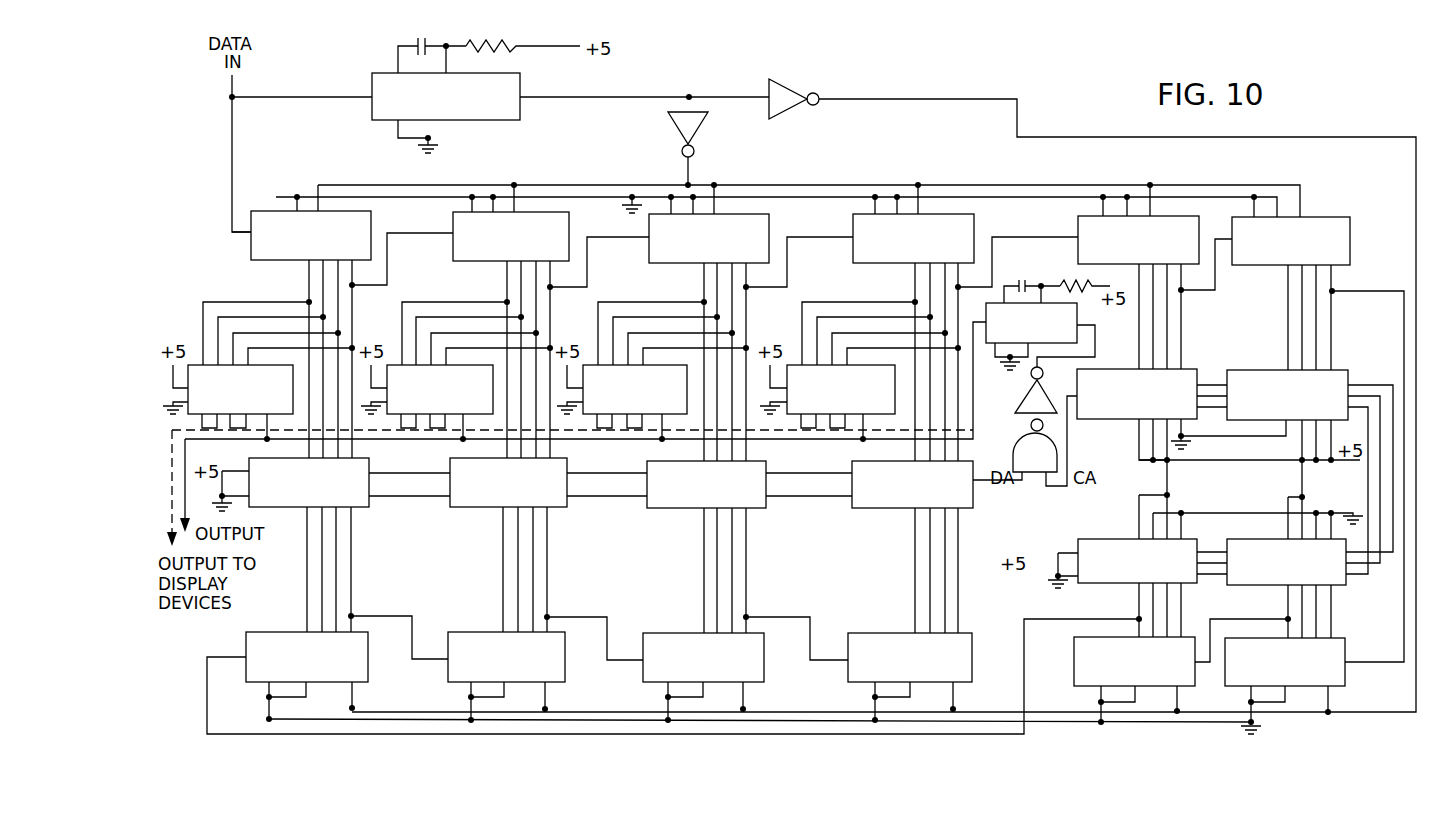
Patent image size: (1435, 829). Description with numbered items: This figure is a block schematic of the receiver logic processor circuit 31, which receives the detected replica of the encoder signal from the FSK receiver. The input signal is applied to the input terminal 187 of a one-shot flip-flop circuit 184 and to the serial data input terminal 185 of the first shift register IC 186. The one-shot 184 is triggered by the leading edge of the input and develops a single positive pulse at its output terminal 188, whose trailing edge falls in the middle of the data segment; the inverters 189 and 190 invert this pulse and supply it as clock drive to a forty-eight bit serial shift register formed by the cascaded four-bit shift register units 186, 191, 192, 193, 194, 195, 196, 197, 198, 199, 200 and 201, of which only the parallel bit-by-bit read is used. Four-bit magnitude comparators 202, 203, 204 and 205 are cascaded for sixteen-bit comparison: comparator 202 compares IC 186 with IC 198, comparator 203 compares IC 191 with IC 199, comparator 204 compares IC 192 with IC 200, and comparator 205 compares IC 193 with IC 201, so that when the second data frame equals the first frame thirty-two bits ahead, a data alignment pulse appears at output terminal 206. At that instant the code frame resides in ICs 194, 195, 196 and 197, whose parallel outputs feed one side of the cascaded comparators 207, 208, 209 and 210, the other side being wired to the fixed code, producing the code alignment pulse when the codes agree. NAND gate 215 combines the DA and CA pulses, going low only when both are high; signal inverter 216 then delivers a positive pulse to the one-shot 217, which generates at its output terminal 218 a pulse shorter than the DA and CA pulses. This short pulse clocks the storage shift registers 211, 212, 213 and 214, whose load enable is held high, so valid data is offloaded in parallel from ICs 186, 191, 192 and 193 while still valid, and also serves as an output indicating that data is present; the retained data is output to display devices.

The receiver logic processor circuit 31 is at (1030, 102).
The one-shot flip-flop circuit 184 is at (462, 121).
The serial data input terminal 185 is at (251, 233).
The 7495 IC 186 is at (371, 218).
The input terminal 187 is at (372, 100).
The output terminal 188 is at (520, 97).
The inverter 189 is at (700, 126).
The inverter 190 is at (790, 89).
The 7495 IC 191 is at (569, 219).
The 7495 IC 192 is at (769, 218).
The 7495 IC 193 is at (974, 218).
The 7495 IC 194 is at (1078, 253).
The 7495 IC 195 is at (1318, 217).
The 7495 IC 196 is at (1338, 686).
The 7495 IC 197 is at (1182, 686).
The 7495 IC 198 is at (357, 682).
The 7495 IC 199 is at (557, 682).
The 7495 IC 200 is at (757, 682).
The 7495 IC 201 is at (964, 682).
The 4 bit magnitude comparitor unit 202 is at (360, 507).
The 4 bit magnitude comparitor unit 203 is at (560, 507).
The 4 bit magnitude comparitor unit 204 is at (758, 508).
The 4 bit magnitude comparitor unit 205 is at (965, 508).
The output terminal 206 is at (973, 487).
The 4 bit magnitude comparator 207 is at (1197, 369).
The 4 bit magnitude comparator 208 is at (1348, 370).
The 4 bit magnitude comparator 209 is at (1227, 540).
The 4 bit magnitude comparator 210 is at (1078, 540).
The 4 bit shift register 211 is at (255, 397).
The 4 bit shift register 212 is at (455, 397).
The 4 bit shift register 213 is at (650, 397).
The 4 bit shift register 214 is at (856, 397).
The NAND gate 215 is at (1057, 452).
The signal inverter 216 is at (1025, 397).
The one-shot IC 217 is at (1077, 320).
The output terminal 218 is at (992, 316).